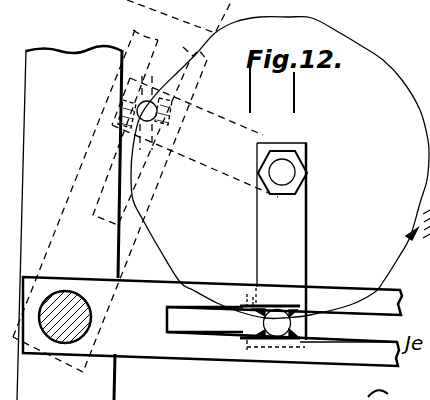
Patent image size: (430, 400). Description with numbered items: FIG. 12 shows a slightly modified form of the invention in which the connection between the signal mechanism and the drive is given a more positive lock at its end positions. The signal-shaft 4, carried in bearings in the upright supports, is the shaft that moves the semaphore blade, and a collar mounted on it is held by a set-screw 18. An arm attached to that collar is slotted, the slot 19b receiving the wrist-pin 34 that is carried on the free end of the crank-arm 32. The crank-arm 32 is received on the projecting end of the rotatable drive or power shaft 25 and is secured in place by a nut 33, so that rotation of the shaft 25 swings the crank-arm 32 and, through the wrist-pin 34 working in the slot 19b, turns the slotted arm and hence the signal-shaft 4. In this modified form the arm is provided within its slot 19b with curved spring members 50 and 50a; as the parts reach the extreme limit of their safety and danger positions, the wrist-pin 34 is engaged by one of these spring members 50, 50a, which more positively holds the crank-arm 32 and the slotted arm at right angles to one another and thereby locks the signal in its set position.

The set-screw 18 is at (69, 223).
The signal-shaft 4 is at (209, 319).
The curved spring member 50a is at (252, 334).
The crank-arm 32 is at (281, 241).
The nut 33 is at (292, 157).
The rotatable drive or power shaft 25 is at (283, 173).
The curved spring member 50 is at (292, 311).
The wrist-pin 34 is at (276, 327).
The slot 19b is at (343, 328).